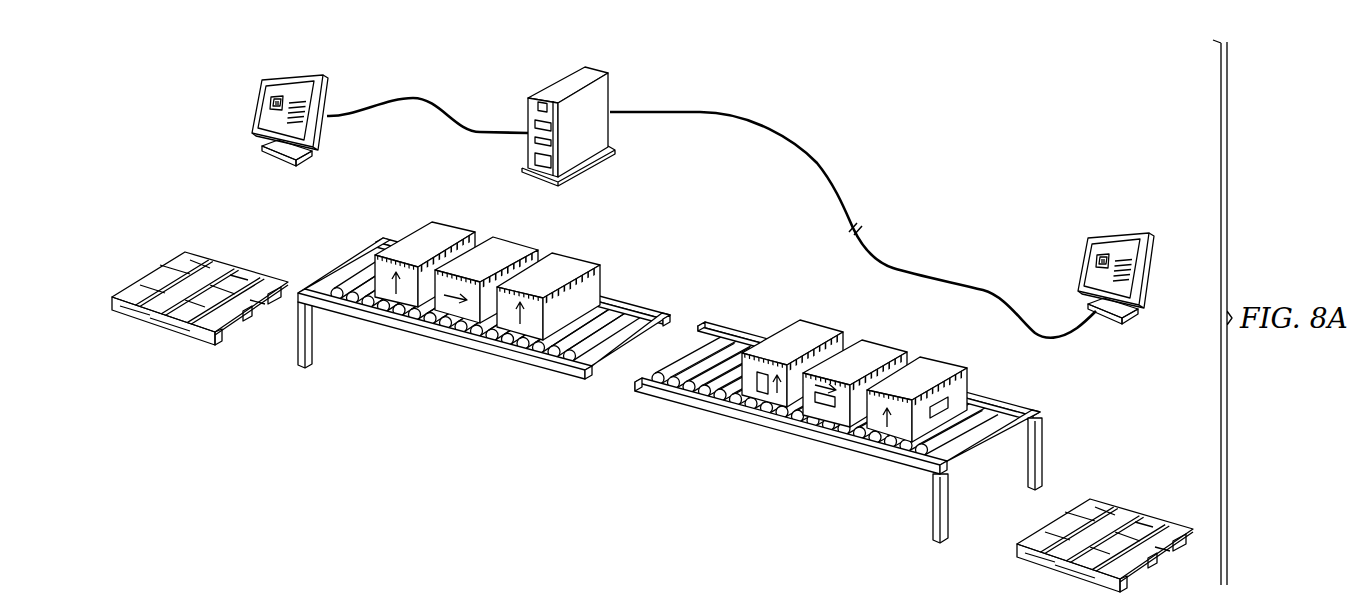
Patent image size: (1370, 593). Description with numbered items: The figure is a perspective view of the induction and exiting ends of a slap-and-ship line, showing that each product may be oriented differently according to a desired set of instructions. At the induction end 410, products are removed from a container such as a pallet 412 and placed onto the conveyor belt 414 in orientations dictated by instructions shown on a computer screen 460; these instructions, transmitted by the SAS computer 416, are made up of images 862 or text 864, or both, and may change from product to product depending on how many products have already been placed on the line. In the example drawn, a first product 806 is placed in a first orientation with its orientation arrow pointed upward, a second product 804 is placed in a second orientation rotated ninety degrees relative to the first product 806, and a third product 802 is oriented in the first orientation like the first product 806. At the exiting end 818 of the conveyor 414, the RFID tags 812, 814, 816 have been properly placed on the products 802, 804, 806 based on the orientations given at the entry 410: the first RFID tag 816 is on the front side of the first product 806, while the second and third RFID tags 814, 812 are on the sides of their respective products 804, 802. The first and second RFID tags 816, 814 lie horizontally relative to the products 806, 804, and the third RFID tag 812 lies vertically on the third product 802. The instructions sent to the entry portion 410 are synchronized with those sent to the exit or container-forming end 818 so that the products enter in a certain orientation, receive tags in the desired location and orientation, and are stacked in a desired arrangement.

The induction end 410 is at (349, 249).
The pallet 412 is at (156, 277).
The conveyor belt 414 is at (442, 340).
The SAS computer 416 is at (563, 88).
The computer screen 460 is at (262, 92).
The third product 802 is at (455, 233).
The second product 804 is at (518, 249).
The first product 806 is at (581, 264).
The third RFID tag 812 is at (757, 381).
The second RFID tag 814 is at (821, 406).
The first RFID tag 816 is at (955, 402).
The exiting end 818 is at (1043, 394).
The images 862 is at (274, 112).
The text 864 is at (297, 98).